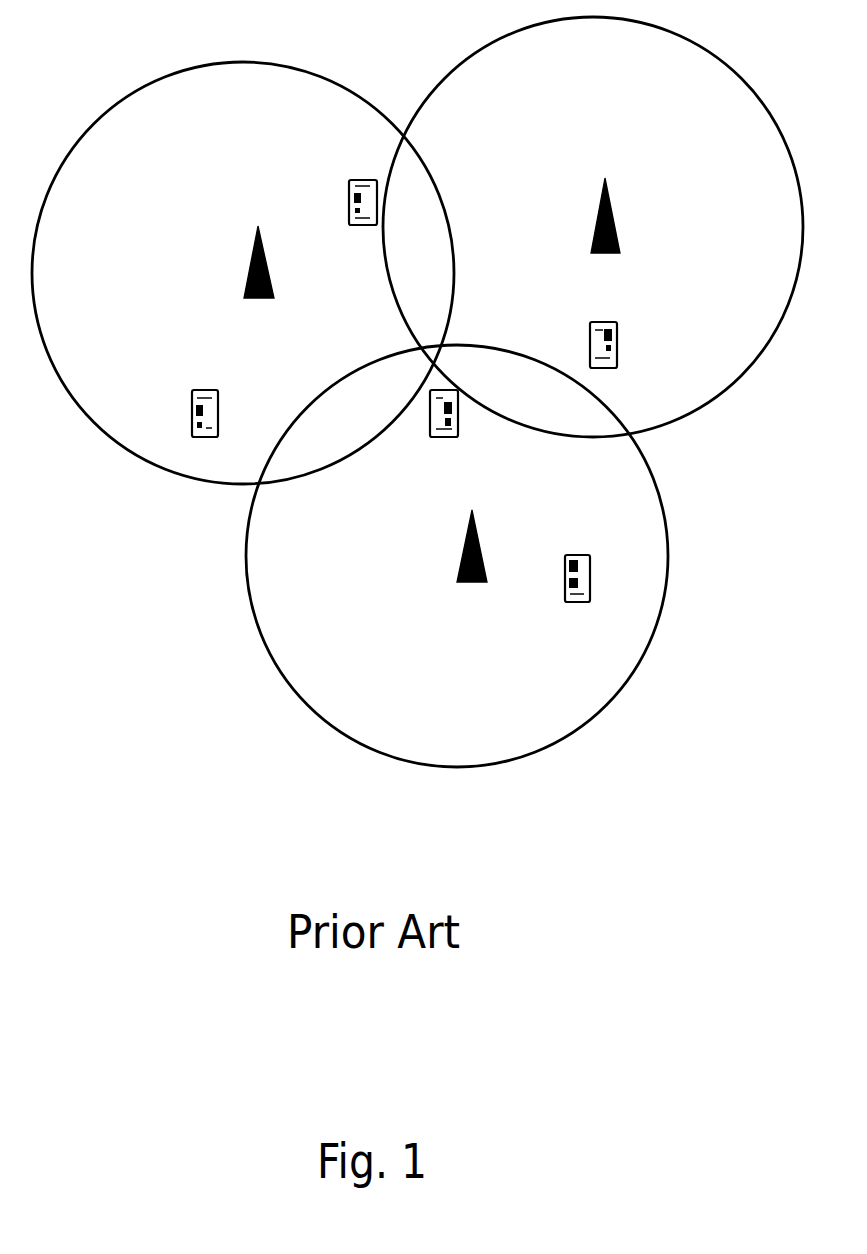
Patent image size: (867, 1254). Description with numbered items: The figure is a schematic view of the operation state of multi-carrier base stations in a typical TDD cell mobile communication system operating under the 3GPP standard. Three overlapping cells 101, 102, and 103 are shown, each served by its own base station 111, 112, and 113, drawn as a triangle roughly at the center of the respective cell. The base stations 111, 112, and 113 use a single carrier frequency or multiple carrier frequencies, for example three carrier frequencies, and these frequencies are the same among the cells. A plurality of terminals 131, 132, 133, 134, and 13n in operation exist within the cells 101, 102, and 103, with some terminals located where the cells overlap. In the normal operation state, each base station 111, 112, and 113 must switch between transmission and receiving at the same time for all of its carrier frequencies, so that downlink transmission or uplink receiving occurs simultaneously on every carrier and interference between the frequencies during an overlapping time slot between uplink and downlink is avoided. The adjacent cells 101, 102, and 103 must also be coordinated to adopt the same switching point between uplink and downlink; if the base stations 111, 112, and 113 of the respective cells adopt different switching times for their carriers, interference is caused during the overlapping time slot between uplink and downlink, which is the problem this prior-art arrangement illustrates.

The cell 101 is at (243, 273).
The cell 102 is at (593, 227).
The cell 103 is at (457, 556).
The base station 111 is at (242, 261).
The base station 112 is at (623, 208).
The base station 113 is at (452, 545).
The terminal 131 is at (364, 183).
The terminal 132 is at (581, 341).
The terminal 133 is at (179, 406).
The terminal 134 is at (405, 405).
The terminal 13n is at (580, 555).